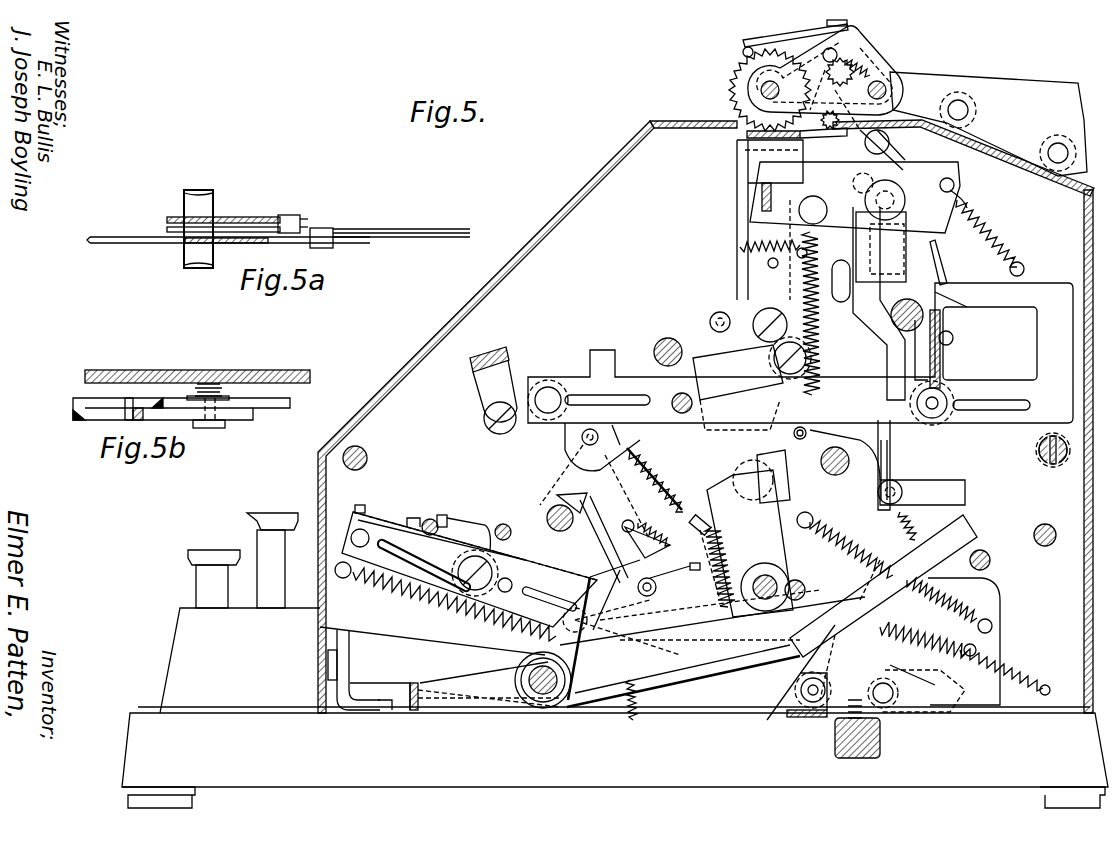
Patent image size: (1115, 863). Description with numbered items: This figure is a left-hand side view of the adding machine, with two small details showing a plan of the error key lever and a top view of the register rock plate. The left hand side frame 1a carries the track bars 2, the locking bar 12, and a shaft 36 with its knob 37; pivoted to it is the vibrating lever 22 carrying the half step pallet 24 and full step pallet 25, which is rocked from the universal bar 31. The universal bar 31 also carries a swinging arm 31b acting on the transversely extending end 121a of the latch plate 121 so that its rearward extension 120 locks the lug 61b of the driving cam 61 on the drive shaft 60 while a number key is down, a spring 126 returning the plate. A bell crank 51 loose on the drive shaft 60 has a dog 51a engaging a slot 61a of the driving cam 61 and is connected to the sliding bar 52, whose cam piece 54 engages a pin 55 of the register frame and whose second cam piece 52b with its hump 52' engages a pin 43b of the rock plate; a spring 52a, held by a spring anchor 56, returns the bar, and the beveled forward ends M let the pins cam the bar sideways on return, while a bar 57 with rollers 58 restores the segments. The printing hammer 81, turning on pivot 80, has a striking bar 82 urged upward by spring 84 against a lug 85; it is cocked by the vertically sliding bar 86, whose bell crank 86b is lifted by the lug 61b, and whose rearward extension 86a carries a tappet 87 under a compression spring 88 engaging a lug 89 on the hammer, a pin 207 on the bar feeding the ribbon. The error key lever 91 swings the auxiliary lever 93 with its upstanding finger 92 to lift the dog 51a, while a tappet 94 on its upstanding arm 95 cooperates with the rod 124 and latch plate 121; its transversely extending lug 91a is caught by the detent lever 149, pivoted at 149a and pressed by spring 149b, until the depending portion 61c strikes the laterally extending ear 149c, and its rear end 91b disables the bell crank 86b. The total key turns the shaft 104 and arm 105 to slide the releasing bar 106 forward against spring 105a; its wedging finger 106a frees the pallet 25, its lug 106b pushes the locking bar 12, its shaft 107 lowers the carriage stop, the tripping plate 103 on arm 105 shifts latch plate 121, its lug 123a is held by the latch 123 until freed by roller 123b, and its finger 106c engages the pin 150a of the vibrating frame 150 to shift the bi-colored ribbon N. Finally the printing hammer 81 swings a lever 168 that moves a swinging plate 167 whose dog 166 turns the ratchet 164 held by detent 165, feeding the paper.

In FIG. 5B, the left hand side frame 1a is at (250, 370).
In FIG. 5, the left hand side frame 1a is at (600, 175).
In FIG. 5, the track bars 2 is at (672, 338).
In FIG. 5, the locking bar 12 is at (497, 352).
In FIG. 5, the vibrating lever 22 is at (945, 350).
In FIG. 5, the half step pallet 24 is at (950, 362).
In FIG. 5, the full step pallet 25 is at (954, 335).
In FIG. 5, the universal bar 31 is at (420, 713).
In FIG. 5, the swinging arm 31b is at (604, 630).
In FIG. 5, the shaft 36 is at (1050, 464).
In FIG. 5, the knob 37 is at (1040, 448).
In FIG. 5, the pin 43b is at (432, 518).
In FIG. 5, the bell crank 51 is at (795, 450).
In FIG. 5, the dog 51a is at (740, 476).
In FIG. 5, the sliding bar 52 is at (469, 569).
In FIG. 5B, the hump 52' is at (123, 378).
In FIG. 5, the hump 52' is at (417, 488).
In FIG. 5B, the spring 52a is at (210, 384).
In FIG. 5, the spring 52a is at (445, 601).
In FIG. 5B, the second cam piece 52b is at (80, 398).
In FIG. 5, the second cam piece 52b is at (383, 522).
In FIG. 5B, the cam piece 54 is at (222, 408).
In FIG. 5, the cam piece 54 is at (455, 522).
In FIG. 5, the pin 55 is at (503, 524).
In FIG. 5, the spring anchor 56 is at (812, 520).
In FIG. 5, the bar 57 is at (835, 476).
In FIG. 5, the rollers 58 is at (870, 432).
In FIG. 5, the drive shaft 60 is at (765, 575).
In FIG. 5, the driving cam 61 is at (845, 549).
In FIG. 5, the slot 61a is at (697, 518).
In FIG. 5, the lug 61b is at (893, 630).
In FIG. 5, the depending portion 61c is at (785, 695).
In FIG. 5, the pivot 80 is at (865, 200).
In FIG. 5, the printing hammer 81 is at (955, 180).
In FIG. 5, the striking bar 82 is at (762, 210).
In FIG. 5, the spring 84 is at (995, 236).
In FIG. 5, the lug 85 is at (840, 160).
In FIG. 5, the vertically sliding bar 86 is at (868, 303).
In FIG. 5, the rearward extension 86a is at (881, 247).
In FIG. 5, the bell crank 86b is at (930, 482).
In FIG. 5, the tappet 87 is at (946, 262).
In FIG. 5, the compression spring 88 is at (805, 270).
In FIG. 5, the lug 89 is at (967, 204).
In FIG. 5A, the error key lever 91 is at (180, 243).
In FIG. 5, the error key lever 91 is at (434, 668).
In FIG. 5, the transversely extending lug 91a is at (790, 660).
In FIG. 5, the rear end 91b is at (970, 528).
In FIG. 5A, the upstanding finger 92 is at (390, 229).
In FIG. 5, the upstanding finger 92 is at (690, 570).
In FIG. 5A, the auxiliary lever 93 is at (325, 228).
In FIG. 5, the auxiliary lever 93 is at (683, 676).
In FIG. 5, the tappet 94 is at (589, 526).
In FIG. 5, the upstanding arm 95 is at (646, 525).
In FIG. 5, the tripping plate 103 is at (560, 470).
In FIG. 5A, the shaft 104 is at (196, 204).
In FIG. 5, the shaft 104 is at (545, 695).
In FIG. 5A, the arm 105 is at (245, 217).
In FIG. 5, the arm 105 is at (650, 475).
In FIG. 5, the spring 105a is at (638, 715).
In FIG. 5, the releasing bar 106 is at (645, 377).
In FIG. 5, the wedging finger 106a is at (986, 345).
In FIG. 5, the lug 106b is at (590, 360).
In FIG. 5, the finger 106c is at (902, 403).
In FIG. 5, the shaft 107 is at (694, 402).
In FIG. 5, the rearward extension 120 is at (975, 580).
In FIG. 5, the latch plate 121 is at (626, 616).
In FIG. 5, the transversely extending end 121a is at (535, 585).
In FIG. 5, the latch 123 is at (752, 366).
In FIG. 5, the lug 123a is at (740, 415).
In FIG. 5, the roller 123b is at (794, 434).
In FIG. 5, the rod 124 is at (550, 508).
In FIG. 5, the spring 126 is at (1010, 676).
In FIG. 5, the detent lever 149 is at (805, 700).
In FIG. 5, the pivot 149a is at (812, 712).
In FIG. 5, the spring 149b is at (882, 735).
In FIG. 5, the laterally extending ear 149c is at (898, 680).
In FIG. 5, the vibrating frame 150 is at (740, 172).
In FIG. 5, the pin 150a is at (766, 262).
In FIG. 5, the ratchet 164 is at (745, 72).
In FIG. 5, the detent 165 is at (748, 44).
In FIG. 5, the dog 166 is at (870, 60).
In FIG. 5, the swinging plate 167 is at (760, 72).
In FIG. 5, the lever 168 is at (890, 78).
In FIG. 5, the pin 207 is at (750, 310).
In FIG. 5B, the beveled forward ends M is at (163, 398).
In FIG. 5, the beveled forward ends M is at (356, 505).
In FIG. 5, the bi-colored ribbon N is at (750, 131).